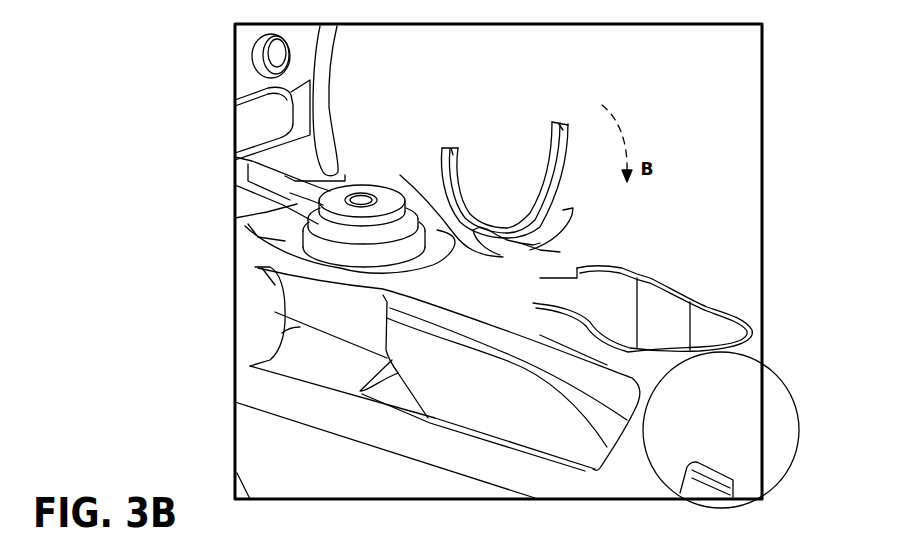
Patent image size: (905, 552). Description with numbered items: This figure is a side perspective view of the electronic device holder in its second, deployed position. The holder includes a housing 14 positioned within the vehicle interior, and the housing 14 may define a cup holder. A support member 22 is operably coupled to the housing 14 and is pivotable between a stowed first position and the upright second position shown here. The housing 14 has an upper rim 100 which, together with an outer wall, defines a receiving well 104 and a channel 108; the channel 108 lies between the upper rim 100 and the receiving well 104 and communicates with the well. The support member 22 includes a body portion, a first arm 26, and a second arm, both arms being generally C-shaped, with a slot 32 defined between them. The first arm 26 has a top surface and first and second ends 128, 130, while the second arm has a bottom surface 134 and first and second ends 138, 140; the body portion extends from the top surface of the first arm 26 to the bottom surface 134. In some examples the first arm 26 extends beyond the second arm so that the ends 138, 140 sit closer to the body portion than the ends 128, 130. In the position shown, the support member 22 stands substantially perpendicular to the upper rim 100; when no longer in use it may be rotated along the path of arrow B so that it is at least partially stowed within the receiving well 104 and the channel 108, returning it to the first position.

The housing 14 is at (713, 337).
The support member 22 is at (544, 146).
The first arm 26 is at (440, 197).
The slot 32 is at (576, 203).
The upper rim 100 is at (752, 338).
The receiving well 104 is at (501, 271).
The channel 108 is at (632, 271).
The first end of first arm 128 is at (553, 122).
The second end of first arm 130 is at (457, 150).
The bottom surface 134 is at (493, 257).
The first end of second arm 138 is at (563, 222).
The second end of second arm 140 is at (440, 312).